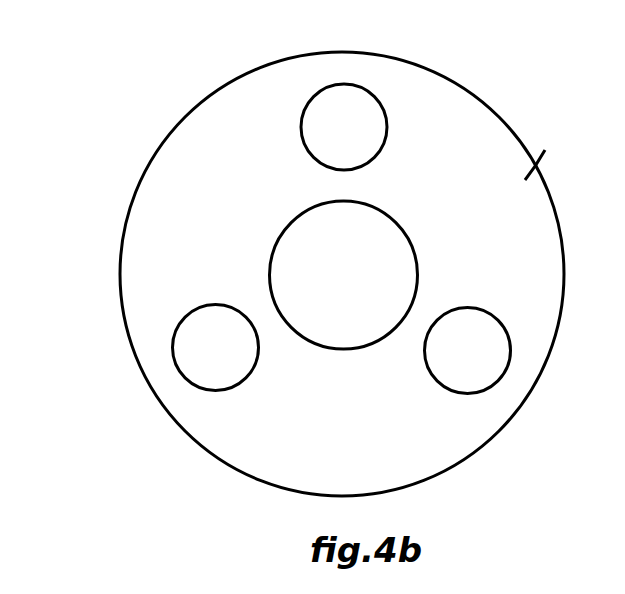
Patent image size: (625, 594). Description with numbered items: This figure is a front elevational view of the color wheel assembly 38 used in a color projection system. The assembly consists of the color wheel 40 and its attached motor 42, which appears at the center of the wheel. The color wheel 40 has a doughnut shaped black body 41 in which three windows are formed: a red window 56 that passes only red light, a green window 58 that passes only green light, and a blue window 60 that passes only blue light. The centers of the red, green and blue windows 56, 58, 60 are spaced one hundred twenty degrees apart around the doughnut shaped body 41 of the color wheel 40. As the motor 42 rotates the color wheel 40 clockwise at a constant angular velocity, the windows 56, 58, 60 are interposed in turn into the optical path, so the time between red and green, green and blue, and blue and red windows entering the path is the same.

The color wheel assembly 38 is at (107, 122).
The color wheel 40 is at (468, 88).
The doughnut shaped black body 41 is at (518, 186).
The motor 42 is at (292, 238).
The red window 56 is at (320, 107).
The green window 58 is at (193, 323).
The blue window 60 is at (487, 328).